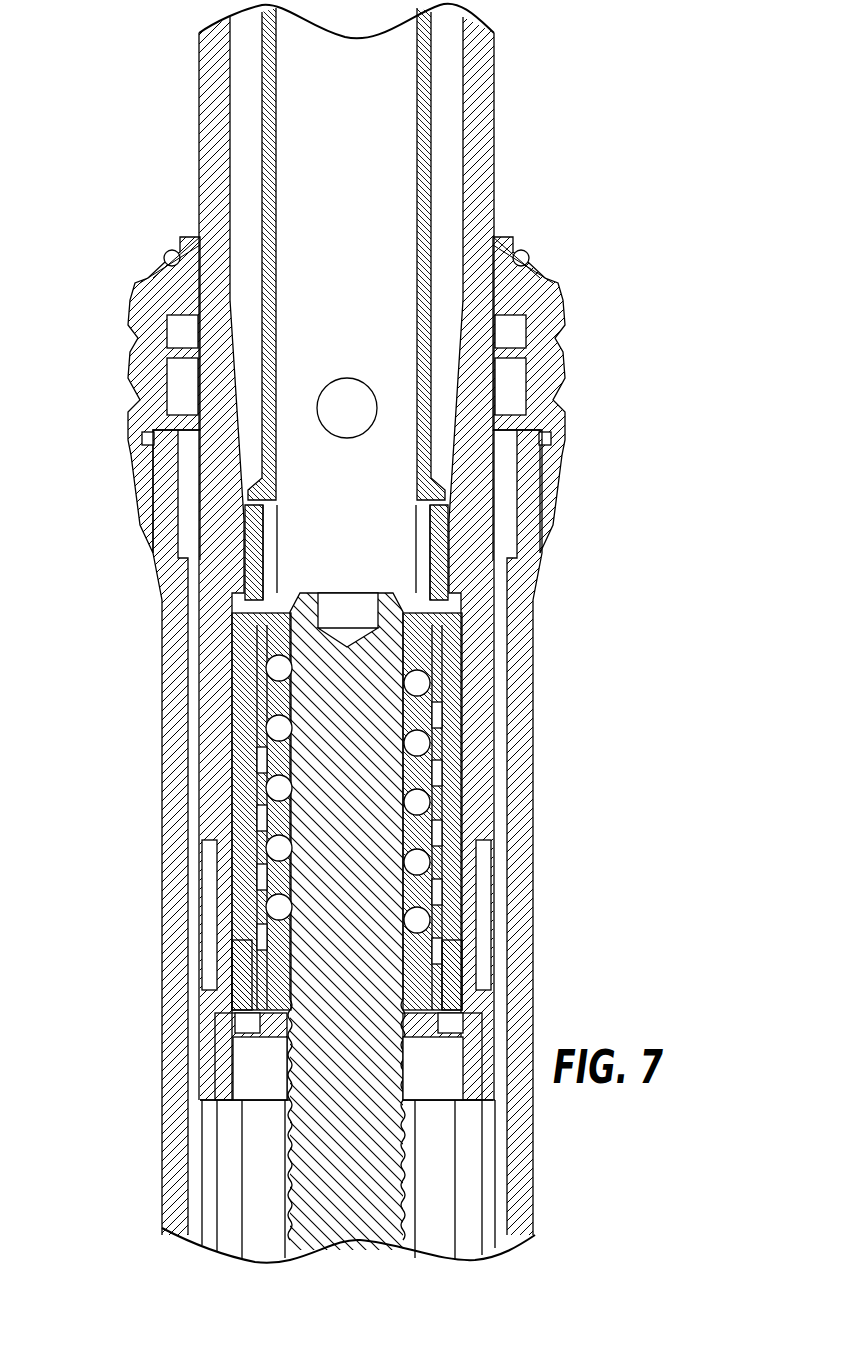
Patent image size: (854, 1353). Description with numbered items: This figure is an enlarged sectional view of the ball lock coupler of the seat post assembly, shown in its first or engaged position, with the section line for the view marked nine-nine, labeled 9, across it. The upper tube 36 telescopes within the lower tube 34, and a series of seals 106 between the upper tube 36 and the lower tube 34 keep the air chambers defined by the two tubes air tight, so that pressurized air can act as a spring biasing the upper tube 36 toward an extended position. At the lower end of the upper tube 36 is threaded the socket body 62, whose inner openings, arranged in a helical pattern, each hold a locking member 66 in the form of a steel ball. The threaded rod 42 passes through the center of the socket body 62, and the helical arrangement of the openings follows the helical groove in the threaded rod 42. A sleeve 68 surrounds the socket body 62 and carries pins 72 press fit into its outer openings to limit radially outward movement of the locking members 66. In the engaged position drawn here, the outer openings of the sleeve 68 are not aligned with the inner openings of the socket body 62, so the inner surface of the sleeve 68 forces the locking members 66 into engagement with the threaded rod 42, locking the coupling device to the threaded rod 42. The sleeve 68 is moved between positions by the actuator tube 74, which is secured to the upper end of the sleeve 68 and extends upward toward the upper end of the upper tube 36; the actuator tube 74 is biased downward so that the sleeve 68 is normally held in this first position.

The upper tube 36 is at (199, 65).
The actuator tube 74 is at (432, 162).
The seals 106 is at (535, 268).
The lower tube 34 is at (162, 940).
The threaded rod 42 is at (372, 1210).
The sleeve 68 is at (452, 672).
The locking members 66 is at (417, 863).
The pins 72 is at (462, 965).
The socket body 62 is at (236, 1035).
The section line 9- 9 is at (153, 731).